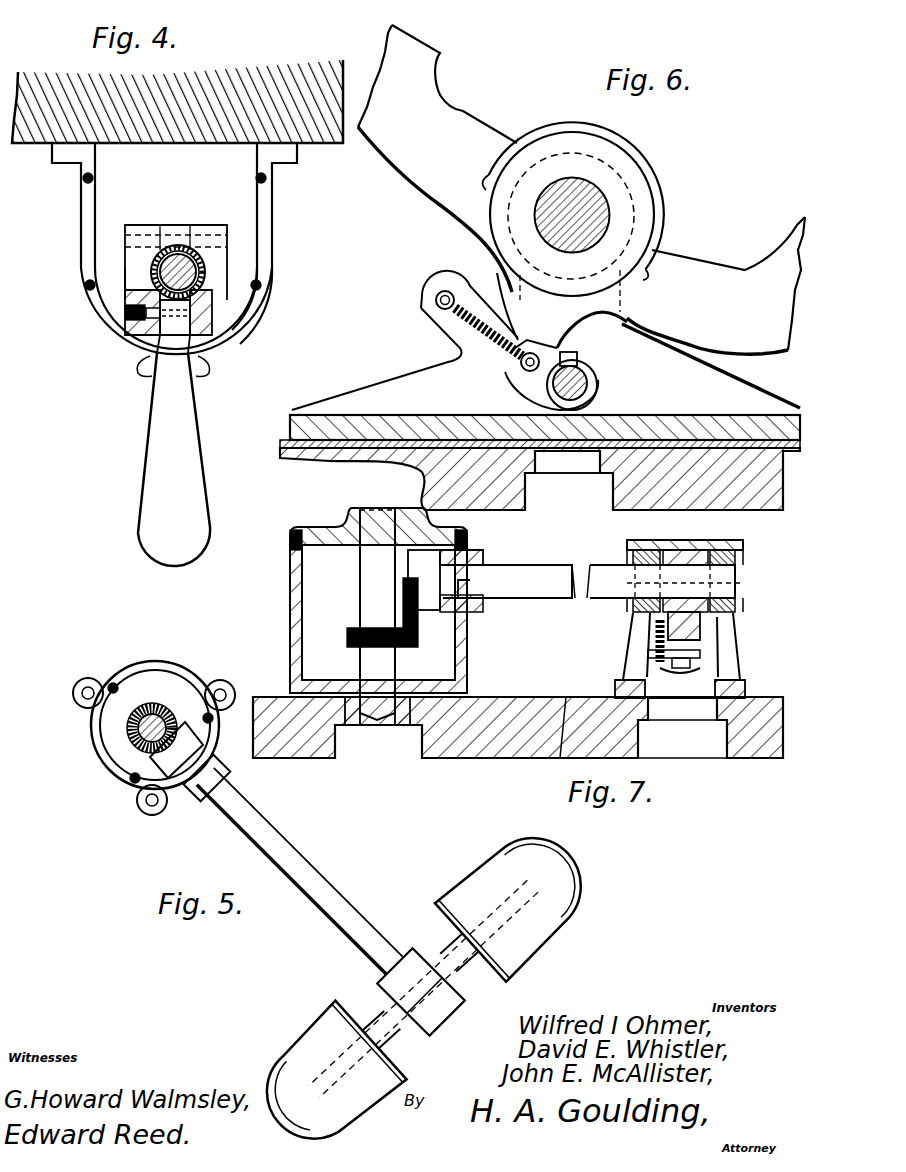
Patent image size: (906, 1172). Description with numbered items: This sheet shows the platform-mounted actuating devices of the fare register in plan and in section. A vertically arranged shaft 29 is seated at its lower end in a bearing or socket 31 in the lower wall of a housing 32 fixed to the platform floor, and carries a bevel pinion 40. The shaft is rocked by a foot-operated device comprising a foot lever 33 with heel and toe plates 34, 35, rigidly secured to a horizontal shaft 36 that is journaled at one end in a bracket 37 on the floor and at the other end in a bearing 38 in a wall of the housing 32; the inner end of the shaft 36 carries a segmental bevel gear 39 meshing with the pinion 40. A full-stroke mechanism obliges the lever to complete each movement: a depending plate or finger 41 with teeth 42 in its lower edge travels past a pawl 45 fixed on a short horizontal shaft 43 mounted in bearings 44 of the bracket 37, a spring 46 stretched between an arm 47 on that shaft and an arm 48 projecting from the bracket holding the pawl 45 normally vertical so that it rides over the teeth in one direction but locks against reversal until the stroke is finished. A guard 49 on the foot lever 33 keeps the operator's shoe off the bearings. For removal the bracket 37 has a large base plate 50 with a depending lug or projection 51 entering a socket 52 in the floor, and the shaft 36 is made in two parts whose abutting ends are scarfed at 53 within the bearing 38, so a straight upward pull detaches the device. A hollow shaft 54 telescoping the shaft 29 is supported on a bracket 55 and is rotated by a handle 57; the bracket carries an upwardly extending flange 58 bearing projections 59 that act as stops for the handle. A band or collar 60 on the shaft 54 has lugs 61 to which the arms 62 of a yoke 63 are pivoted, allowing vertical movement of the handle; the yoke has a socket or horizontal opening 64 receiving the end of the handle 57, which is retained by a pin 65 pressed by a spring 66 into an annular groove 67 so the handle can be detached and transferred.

In FIG. 4, the shaft 29 is at (176, 262).
In FIG. 7, the shaft 29 is at (362, 566).
In FIG. 5, the shaft 29 is at (163, 704).
In FIG. 7, the bearing or socket 31 is at (432, 658).
In FIG. 7, the housing 32 is at (291, 615).
In FIG. 5, the housing 32 is at (150, 663).
In FIG. 6, the foot lever 33 is at (455, 126).
In FIG. 7, the foot lever 33 is at (696, 549).
In FIG. 5, the foot lever 33 is at (448, 950).
In FIG. 6, the heel plate 34 is at (796, 238).
In FIG. 5, the heel plate 34 is at (476, 874).
In FIG. 5, the toe plate 35 is at (310, 1031).
In FIG. 6, the horizontal shaft 36 is at (592, 249).
In FIG. 7, the horizontal shaft 36 is at (559, 598).
In FIG. 5, the horizontal shaft 36 is at (270, 830).
In FIG. 7, the bracket 37 is at (712, 633).
In FIG. 7, the bearing 38 is at (476, 555).
In FIG. 5, the bearing 38 is at (195, 800).
In FIG. 7, the segmental bevel gear 39 is at (405, 611).
In FIG. 5, the segmental bevel gear 39 is at (150, 760).
In FIG. 7, the bevel pinion 40 is at (385, 637).
In FIG. 5, the bevel pinion 40 is at (128, 733).
In FIG. 6, the depending plate or finger 41 is at (567, 337).
In FIG. 7, the depending plate or finger 41 is at (700, 632).
In FIG. 6, the teeth 42 is at (560, 353).
In FIG. 7, the teeth 42 is at (675, 701).
In FIG. 6, the short horizontal shaft 43 is at (575, 385).
In FIG. 7, the short horizontal shaft 43 is at (702, 670).
In FIG. 7, the bearings 44 is at (648, 673).
In FIG. 6, the projection or pawl 45 is at (580, 361).
In FIG. 7, the projection or pawl 45 is at (692, 660).
In FIG. 6, the spring 46 is at (503, 349).
In FIG. 7, the spring 46 is at (655, 641).
In FIG. 6, the arm 47 is at (531, 373).
In FIG. 7, the arm 47 is at (668, 657).
In FIG. 6, the arm 48 is at (438, 305).
In FIG. 6, the guard 49 is at (648, 172).
In FIG. 7, the guard 49 is at (640, 551).
In FIG. 5, the guard 49 is at (466, 990).
In FIG. 6, the base plate 50 is at (300, 423).
In FIG. 7, the base plate 50 is at (712, 672).
In FIG. 6, the depending lug or projection 51 is at (585, 477).
In FIG. 7, the depending lug or projection 51 is at (703, 722).
In FIG. 6, the socket 52 is at (543, 488).
In FIG. 7, the socket 52 is at (655, 722).
In FIG. 7, the scarfed abutting ends 53 is at (482, 603).
In FIG. 4, the hollow shaft 54 is at (160, 236).
In FIG. 4, the bracket 55 is at (245, 262).
In FIG. 4, the handle 57 is at (150, 449).
In FIG. 4, the upwardly extending flange 58 is at (256, 312).
In FIG. 4, the projections (stops) 59 is at (92, 304).
In FIG. 4, the band or collar 60 is at (205, 288).
In FIG. 4, the lugs 61 is at (200, 234).
In FIG. 4, the arms 62 is at (134, 228).
In FIG. 4, the yoke 63 is at (125, 267).
In FIG. 4, the socket or horizontal opening 64 is at (178, 330).
In FIG. 4, the pin 65 is at (147, 313).
In FIG. 4, the spring 66 is at (125, 313).
In FIG. 4, the annular groove 67 is at (247, 306).